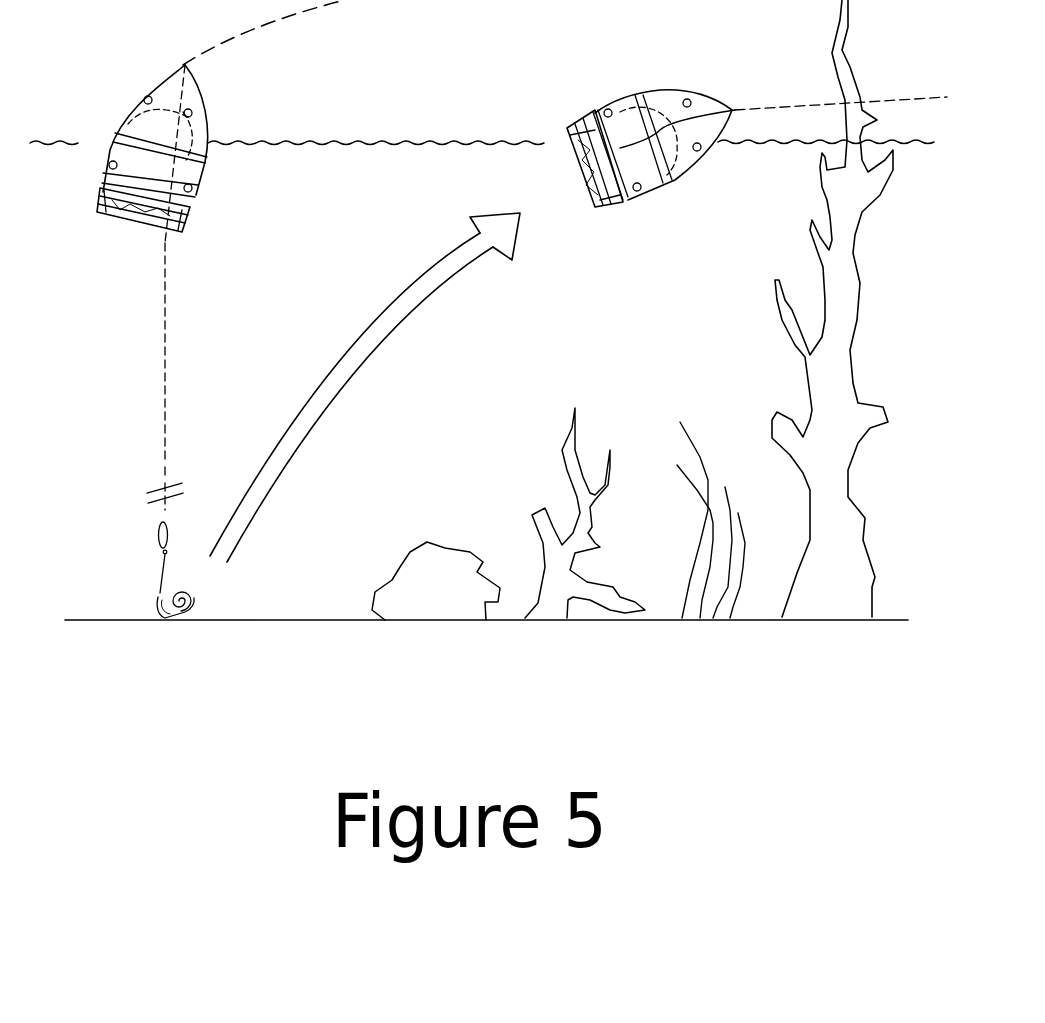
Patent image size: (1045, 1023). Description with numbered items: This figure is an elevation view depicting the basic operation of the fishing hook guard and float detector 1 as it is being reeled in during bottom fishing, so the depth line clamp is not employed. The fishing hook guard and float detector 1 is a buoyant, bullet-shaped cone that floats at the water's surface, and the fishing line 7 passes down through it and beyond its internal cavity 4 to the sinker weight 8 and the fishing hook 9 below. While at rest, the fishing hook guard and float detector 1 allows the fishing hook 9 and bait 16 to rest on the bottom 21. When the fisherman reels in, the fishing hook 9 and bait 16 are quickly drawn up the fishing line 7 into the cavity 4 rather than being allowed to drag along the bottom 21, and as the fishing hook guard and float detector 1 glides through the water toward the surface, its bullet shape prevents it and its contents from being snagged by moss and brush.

The fishing hook guard and float detector 1 is at (123, 137).
The cavity 4 is at (110, 150).
The fishing line 7 is at (160, 247).
The sinker weight 8 is at (158, 534).
The fishing hook 9 is at (160, 600).
The bait 16 is at (200, 605).
The bottom 21 is at (310, 622).